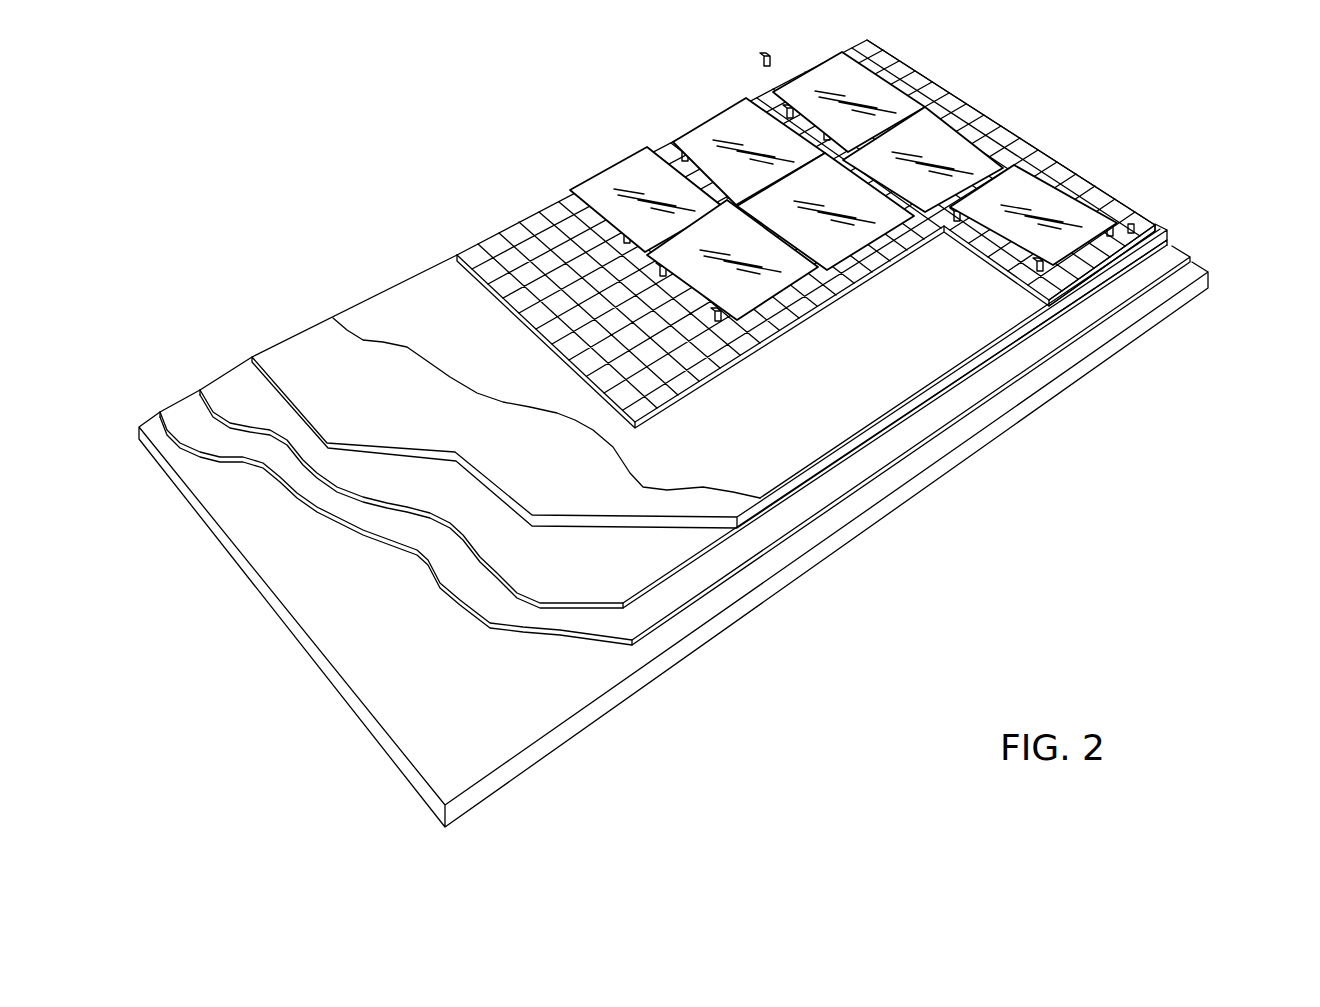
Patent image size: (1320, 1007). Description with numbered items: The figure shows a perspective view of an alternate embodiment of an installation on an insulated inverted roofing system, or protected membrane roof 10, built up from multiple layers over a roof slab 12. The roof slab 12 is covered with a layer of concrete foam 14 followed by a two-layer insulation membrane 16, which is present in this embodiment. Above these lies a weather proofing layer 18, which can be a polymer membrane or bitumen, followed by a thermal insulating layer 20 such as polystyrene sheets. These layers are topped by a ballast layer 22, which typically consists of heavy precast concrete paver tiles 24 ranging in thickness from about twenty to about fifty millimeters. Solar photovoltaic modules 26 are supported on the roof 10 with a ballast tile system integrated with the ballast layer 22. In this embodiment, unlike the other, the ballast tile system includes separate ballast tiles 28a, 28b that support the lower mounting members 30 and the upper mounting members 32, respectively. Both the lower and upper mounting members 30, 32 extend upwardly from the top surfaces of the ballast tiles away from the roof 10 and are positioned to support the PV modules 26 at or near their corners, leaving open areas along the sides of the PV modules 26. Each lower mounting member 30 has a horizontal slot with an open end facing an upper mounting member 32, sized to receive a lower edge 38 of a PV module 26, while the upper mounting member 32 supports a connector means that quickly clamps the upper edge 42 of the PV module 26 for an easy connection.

The protected membrane roof 10 is at (298, 72).
The roof slab 12 is at (563, 684).
The layer of concrete foam 14 is at (693, 577).
The two-layer insulation membrane 16 is at (602, 582).
The weather proofing layer 18 is at (310, 352).
The thermal insulating layer 20 is at (387, 305).
The ballast layer 22 is at (853, 245).
The concrete paver tiles 24 is at (807, 277).
The solar photovoltaic module 26 is at (830, 85).
The ballast tile 28a is at (1067, 282).
The ballast tile 28b is at (1130, 232).
The lower mounting member 30 is at (573, 208).
The upper mounting member 32 is at (810, 278).
The lower edge 38 is at (687, 310).
The upper edge 42 is at (992, 130).